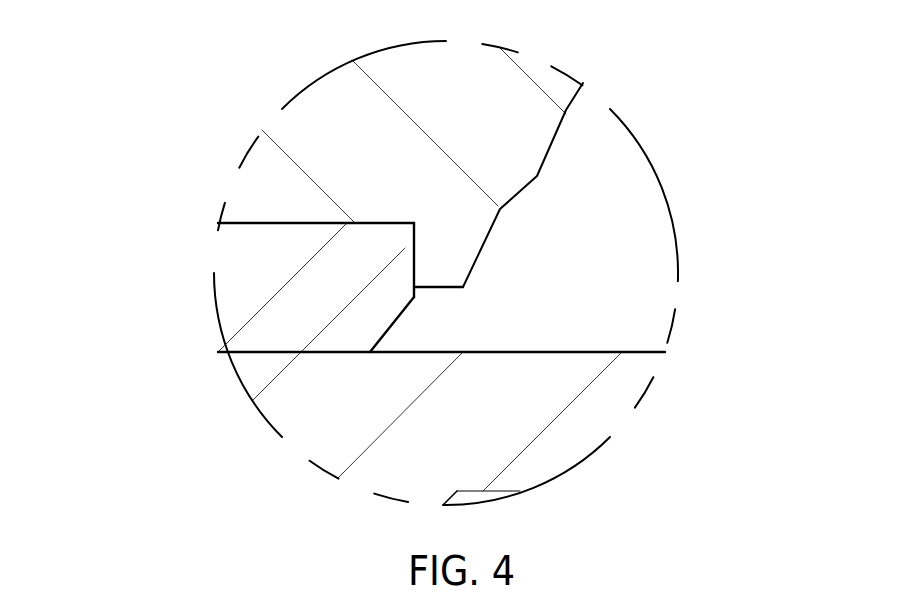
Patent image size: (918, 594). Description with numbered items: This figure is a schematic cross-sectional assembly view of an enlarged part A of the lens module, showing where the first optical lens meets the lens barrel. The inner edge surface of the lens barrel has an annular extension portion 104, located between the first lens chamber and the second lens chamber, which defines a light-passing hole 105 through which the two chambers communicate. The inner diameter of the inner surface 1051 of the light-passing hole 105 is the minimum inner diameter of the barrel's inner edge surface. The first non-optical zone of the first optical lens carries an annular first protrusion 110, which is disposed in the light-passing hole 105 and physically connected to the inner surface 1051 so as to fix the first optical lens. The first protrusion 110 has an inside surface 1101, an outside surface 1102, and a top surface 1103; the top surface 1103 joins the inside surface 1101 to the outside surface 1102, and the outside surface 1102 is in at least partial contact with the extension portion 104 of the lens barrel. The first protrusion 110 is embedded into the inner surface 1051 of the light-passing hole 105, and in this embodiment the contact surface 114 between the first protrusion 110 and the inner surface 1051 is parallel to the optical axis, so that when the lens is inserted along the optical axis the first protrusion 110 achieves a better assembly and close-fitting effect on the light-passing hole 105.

The enlarged part A is at (623, 120).
The extension portion 104 is at (265, 293).
The light-passing hole 105 is at (603, 257).
The inner surface 1051 is at (414, 246).
The first protrusion 110 is at (445, 260).
The inside surface 1101 is at (472, 270).
The outside surface 1102 is at (414, 266).
The top surface 1103 is at (450, 290).
The contact surface 114 is at (414, 246).